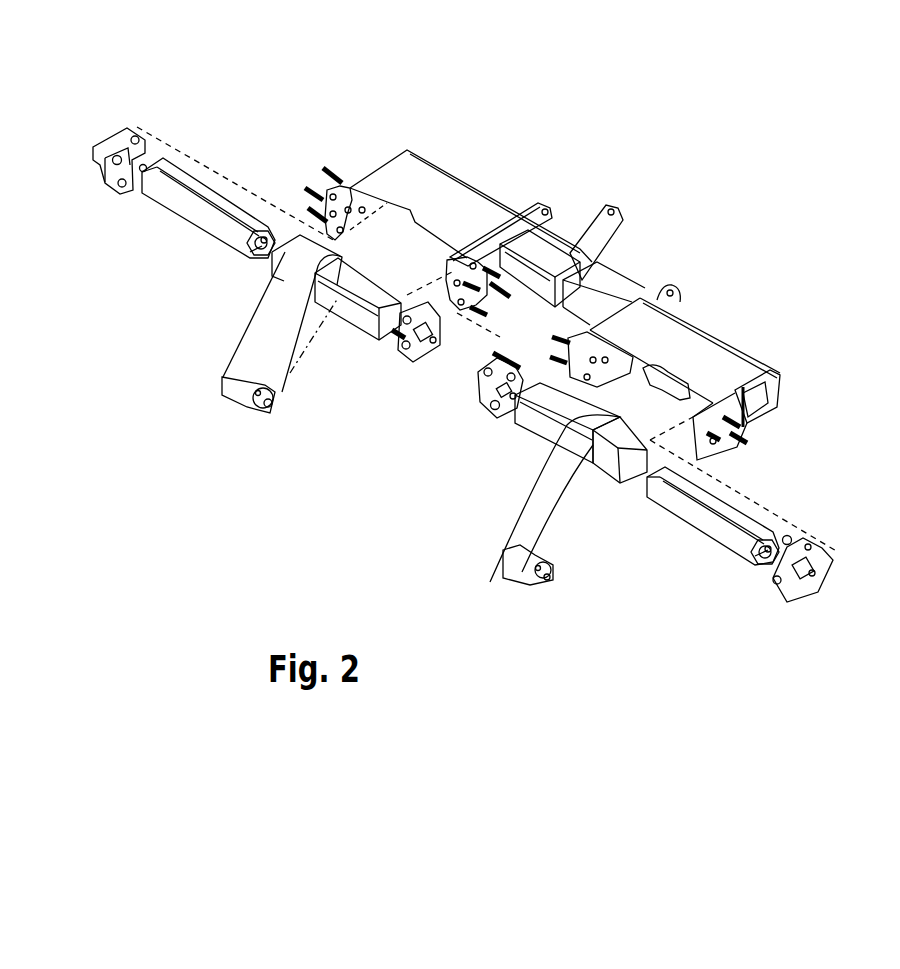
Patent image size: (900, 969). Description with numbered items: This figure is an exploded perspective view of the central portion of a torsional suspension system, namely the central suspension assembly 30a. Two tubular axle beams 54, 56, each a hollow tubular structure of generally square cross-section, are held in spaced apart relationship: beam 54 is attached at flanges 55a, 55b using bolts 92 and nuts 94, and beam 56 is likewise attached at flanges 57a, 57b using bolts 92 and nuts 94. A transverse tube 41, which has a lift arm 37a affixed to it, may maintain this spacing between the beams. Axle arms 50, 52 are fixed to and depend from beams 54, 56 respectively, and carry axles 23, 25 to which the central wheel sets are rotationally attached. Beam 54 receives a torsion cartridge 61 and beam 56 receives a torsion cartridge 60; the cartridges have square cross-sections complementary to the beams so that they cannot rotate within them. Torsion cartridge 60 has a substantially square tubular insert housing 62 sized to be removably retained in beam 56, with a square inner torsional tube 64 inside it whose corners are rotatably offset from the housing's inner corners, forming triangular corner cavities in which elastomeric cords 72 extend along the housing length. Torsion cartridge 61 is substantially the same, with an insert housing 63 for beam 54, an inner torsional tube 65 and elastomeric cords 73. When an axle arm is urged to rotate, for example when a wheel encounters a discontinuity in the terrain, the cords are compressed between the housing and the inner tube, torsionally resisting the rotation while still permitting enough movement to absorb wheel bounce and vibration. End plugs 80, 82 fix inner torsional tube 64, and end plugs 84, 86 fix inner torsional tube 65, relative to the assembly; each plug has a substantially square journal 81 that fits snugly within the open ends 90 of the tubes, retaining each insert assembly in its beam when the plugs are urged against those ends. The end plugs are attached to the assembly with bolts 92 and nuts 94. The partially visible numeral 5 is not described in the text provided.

The mower deck 5 is at (893, 437).
The axle 23 is at (266, 413).
The axle 25 is at (546, 578).
The central suspension assembly 30a is at (713, 330).
The lift arm 37a is at (600, 242).
The transverse tube 41 is at (566, 213).
The axle arm 50 is at (279, 409).
The axle arm 52 is at (538, 552).
The tubular axle beam 54 is at (347, 328).
The flange 55a is at (348, 193).
The flange 55b is at (467, 262).
The tubular axle beam 56 is at (543, 432).
The flange 57a is at (613, 360).
The flange 57b is at (750, 382).
The torsion cartridge 60 is at (733, 559).
The torsion cartridge 61 is at (208, 279).
The insert housing 62 is at (670, 503).
The insert housing 63 is at (260, 257).
The inner torsional tube 64 is at (762, 548).
The inner torsional tube 65 is at (259, 238).
The elastomeric cords 72 is at (767, 553).
The elastomeric cords 73 is at (270, 230).
The end plug 80 is at (815, 568).
The journal 81 is at (515, 385).
The end plug 82 is at (478, 383).
The end plug 84 is at (413, 363).
The end plug 86 is at (128, 140).
The open end 90 is at (257, 255).
The bolt 92 is at (805, 428).
The nut 94 is at (122, 185).